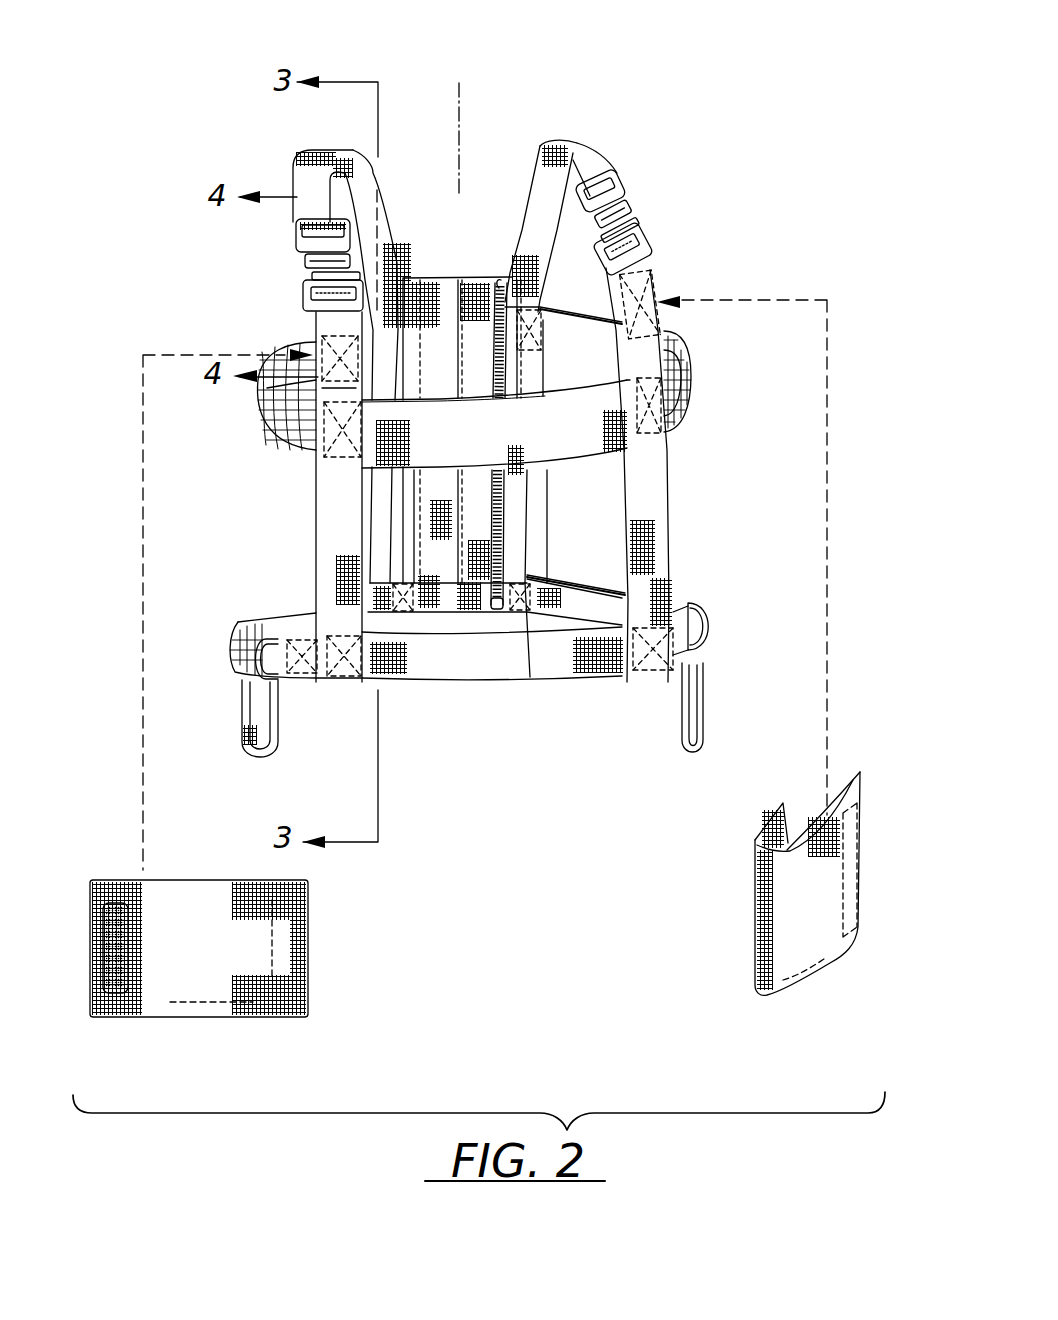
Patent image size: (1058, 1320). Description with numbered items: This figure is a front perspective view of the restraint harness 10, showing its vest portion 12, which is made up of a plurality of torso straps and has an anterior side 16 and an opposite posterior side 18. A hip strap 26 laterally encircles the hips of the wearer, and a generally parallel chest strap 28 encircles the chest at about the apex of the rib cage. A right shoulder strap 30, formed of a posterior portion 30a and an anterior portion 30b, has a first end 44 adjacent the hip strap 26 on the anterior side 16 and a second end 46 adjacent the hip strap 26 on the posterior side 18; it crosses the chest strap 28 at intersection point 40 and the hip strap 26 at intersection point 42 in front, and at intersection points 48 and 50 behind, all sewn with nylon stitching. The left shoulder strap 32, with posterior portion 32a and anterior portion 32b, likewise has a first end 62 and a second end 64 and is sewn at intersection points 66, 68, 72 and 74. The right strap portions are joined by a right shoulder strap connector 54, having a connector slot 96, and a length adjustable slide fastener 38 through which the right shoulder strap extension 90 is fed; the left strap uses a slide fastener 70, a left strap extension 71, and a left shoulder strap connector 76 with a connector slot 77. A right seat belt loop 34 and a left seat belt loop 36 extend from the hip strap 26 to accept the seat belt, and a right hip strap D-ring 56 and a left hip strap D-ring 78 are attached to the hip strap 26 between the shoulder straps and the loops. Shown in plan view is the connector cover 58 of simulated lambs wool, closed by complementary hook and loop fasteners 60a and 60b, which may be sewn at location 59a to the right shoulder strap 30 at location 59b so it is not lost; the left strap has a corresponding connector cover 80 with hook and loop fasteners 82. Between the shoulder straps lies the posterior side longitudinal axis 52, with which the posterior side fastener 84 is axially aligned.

The restraint harness 10 is at (582, 95).
The vest portion 12 is at (700, 475).
The anterior side 16 is at (670, 568).
The posterior side 18 is at (523, 175).
The hip strap 26 is at (587, 670).
The chest strap 28 is at (688, 392).
The right shoulder strap 30 is at (310, 150).
The posterior portion of right shoulder strap 30a is at (373, 173).
The anterior portion of right shoulder strap 30b is at (318, 497).
The left shoulder strap 32 is at (576, 146).
The posterior portion of left shoulder strap 32a is at (521, 212).
The anterior portion of left shoulder strap 32b is at (670, 523).
The right seat belt loop 34 is at (273, 757).
The left seat belt loop 36 is at (703, 743).
The length adjustable slide fastener 38 is at (298, 242).
The intersection point 40 is at (320, 440).
The intersection point 42 is at (353, 677).
The first end of right shoulder strap 44 is at (333, 680).
The second end of right shoulder strap 46 is at (407, 612).
The intersection point 48 is at (393, 273).
The intersection point 50 is at (428, 613).
The posterior side longitudinal axis 52 is at (466, 98).
The right shoulder strap connector 54 is at (303, 296).
The right hip strap D-ring 56 is at (253, 680).
The connector cover 58 is at (152, 1017).
The sewing location 59a is at (207, 1002).
The sewing location 59b is at (322, 383).
The hook and loop fastener 60a is at (120, 888).
The hook and loop fastener 60b is at (310, 928).
The first end of left shoulder strap 62 is at (650, 677).
The second end of left shoulder strap 64 is at (530, 677).
The intersection point 66 is at (673, 363).
The intersection point 68 is at (680, 590).
The length adjustable slide fastener 70 is at (620, 176).
The left strap extension 71 is at (627, 212).
The intersection point 72 is at (540, 320).
The intersection point 74 is at (535, 578).
The left shoulder strap connector 76 is at (643, 243).
The connector slot 77 is at (633, 230).
The left hip strap D-ring 78 is at (708, 630).
The connector cover 80 is at (863, 787).
The hook and loop fasteners 82 is at (857, 867).
The posterior side fastener 84 is at (438, 277).
The right shoulder strap extension 90 is at (305, 262).
The connector slot 96 is at (305, 282).